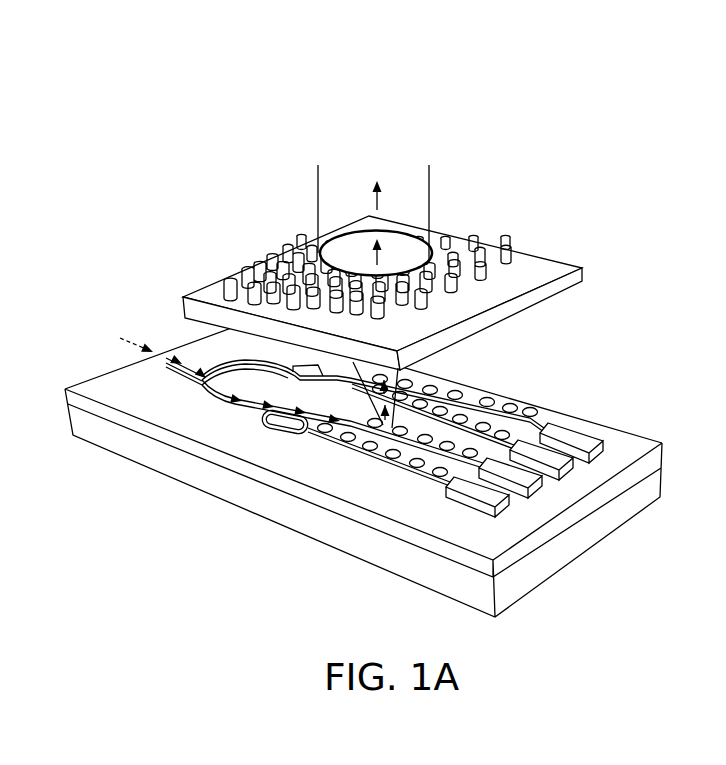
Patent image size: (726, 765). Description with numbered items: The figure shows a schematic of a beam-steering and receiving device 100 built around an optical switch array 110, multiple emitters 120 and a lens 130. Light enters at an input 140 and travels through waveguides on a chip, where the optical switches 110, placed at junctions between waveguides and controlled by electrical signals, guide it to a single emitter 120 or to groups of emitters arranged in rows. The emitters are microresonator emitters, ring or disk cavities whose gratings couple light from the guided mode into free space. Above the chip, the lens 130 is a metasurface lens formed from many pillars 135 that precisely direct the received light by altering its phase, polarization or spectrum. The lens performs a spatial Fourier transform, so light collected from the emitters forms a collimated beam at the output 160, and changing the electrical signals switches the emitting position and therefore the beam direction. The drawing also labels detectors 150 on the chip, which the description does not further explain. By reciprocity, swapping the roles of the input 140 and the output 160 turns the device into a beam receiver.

The beam-steering and receiving device 100 is at (585, 155).
The optical switch array 110 is at (250, 400).
The emitters 120 is at (442, 470).
The lens 130 is at (496, 299).
The pillars 135 is at (500, 242).
The input 140 is at (126, 320).
The detectors 150 is at (496, 498).
The output 160 is at (388, 215).